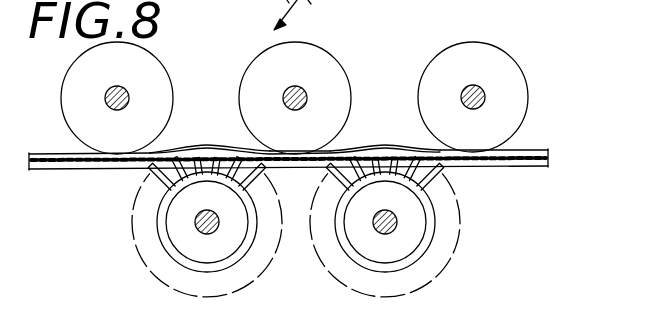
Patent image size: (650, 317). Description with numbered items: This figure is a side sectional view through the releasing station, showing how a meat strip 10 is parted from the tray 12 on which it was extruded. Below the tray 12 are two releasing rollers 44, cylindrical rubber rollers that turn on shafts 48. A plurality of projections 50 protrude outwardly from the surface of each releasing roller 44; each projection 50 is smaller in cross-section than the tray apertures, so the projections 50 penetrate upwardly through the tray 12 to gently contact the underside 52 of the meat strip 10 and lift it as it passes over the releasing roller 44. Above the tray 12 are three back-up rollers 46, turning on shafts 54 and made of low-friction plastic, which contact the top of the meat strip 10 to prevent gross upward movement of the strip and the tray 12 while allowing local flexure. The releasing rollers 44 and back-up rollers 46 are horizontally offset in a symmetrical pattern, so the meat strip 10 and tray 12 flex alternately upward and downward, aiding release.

The meat strip 10 is at (190, 148).
The tray 12 is at (62, 169).
The releasing roller 44 is at (150, 278).
The back-up roller 46 is at (65, 71).
The shaft 48 is at (212, 233).
The projection 50 is at (160, 183).
The underside of the meat strip 52 is at (376, 149).
The shaft 54 is at (128, 91).